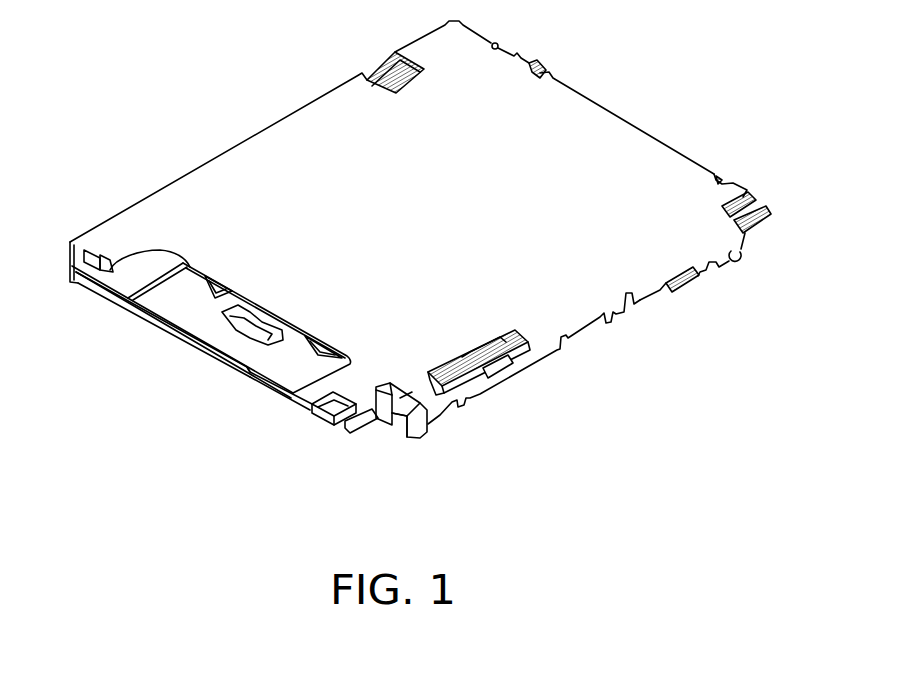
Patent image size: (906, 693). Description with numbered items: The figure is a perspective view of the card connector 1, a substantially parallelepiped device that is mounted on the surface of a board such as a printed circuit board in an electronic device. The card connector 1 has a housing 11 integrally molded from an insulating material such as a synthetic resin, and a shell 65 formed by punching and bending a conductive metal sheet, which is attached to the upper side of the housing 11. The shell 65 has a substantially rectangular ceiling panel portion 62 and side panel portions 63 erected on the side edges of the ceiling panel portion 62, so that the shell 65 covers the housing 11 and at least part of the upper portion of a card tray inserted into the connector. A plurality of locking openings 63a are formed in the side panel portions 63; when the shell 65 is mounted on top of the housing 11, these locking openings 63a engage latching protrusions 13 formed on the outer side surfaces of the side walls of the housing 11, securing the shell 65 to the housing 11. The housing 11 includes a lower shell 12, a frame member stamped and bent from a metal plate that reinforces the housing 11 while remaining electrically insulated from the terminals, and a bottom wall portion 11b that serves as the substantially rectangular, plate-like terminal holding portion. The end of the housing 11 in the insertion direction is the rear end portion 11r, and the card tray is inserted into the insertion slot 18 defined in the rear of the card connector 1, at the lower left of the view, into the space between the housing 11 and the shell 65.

The card connector 1 is at (632, 91).
The housing 11 is at (85, 276).
The bottom wall portion 11b is at (185, 318).
The rear end portion 11r is at (250, 375).
The lower shell 12 is at (125, 295).
The latching protrusions 13 is at (680, 283).
The insertion slot 18 is at (328, 422).
The ceiling panel portion 62 is at (248, 165).
The side panel portions 63 is at (553, 345).
The locking openings 63a is at (697, 274).
The shell 65 is at (675, 148).